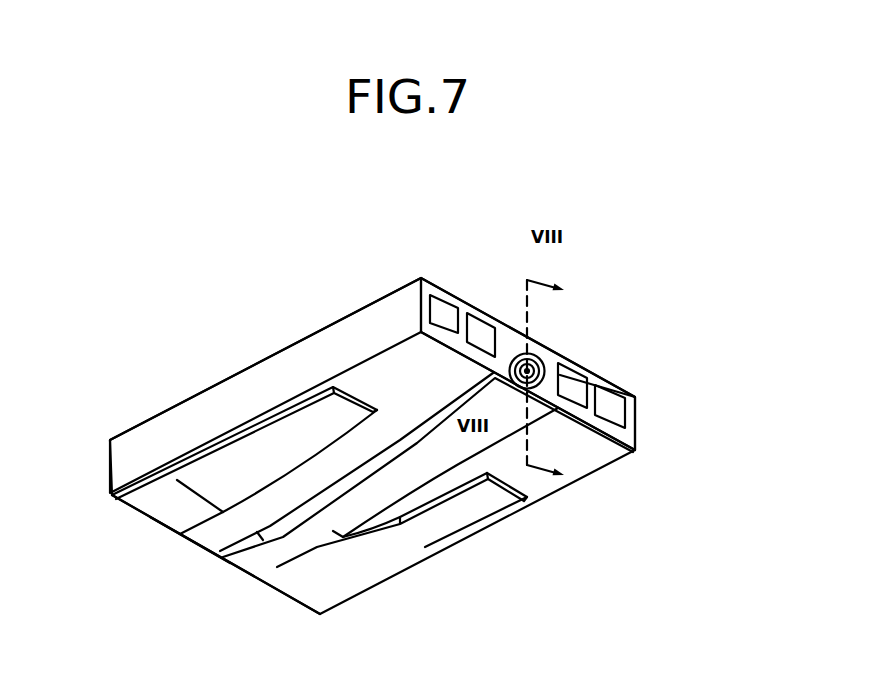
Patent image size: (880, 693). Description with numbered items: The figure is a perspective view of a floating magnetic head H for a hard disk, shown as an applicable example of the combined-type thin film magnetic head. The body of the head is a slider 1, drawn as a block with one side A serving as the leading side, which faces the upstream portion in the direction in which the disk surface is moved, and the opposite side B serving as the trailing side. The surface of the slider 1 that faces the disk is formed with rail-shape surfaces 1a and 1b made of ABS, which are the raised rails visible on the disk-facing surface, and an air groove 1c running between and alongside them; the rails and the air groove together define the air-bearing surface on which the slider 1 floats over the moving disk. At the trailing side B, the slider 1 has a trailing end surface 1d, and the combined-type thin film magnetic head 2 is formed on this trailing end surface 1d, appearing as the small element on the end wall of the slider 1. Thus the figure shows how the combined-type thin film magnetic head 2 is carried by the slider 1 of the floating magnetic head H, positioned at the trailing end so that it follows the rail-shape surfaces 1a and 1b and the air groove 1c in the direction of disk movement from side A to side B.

The slider 1 is at (277, 353).
The rail-shape surface 1a is at (213, 477).
The rail-shape surface 1b is at (557, 408).
The air groove 1c is at (292, 480).
The trailing end surface 1d is at (627, 436).
The combined-type thin film magnetic head 2 is at (543, 348).
The floating magnetic head H is at (328, 316).
The leading side A is at (191, 547).
The trailing side B is at (590, 355).